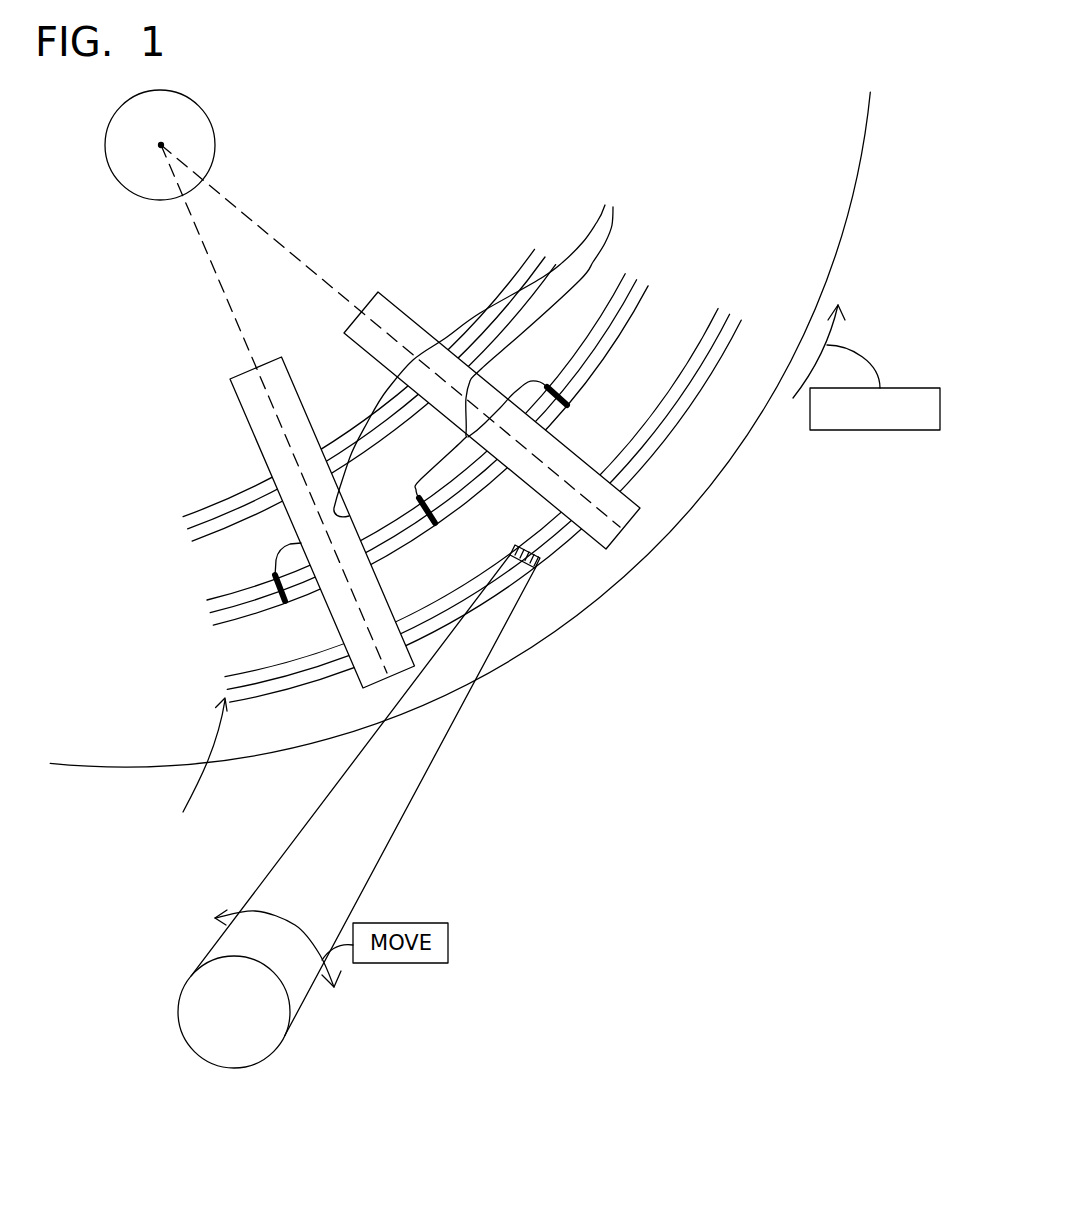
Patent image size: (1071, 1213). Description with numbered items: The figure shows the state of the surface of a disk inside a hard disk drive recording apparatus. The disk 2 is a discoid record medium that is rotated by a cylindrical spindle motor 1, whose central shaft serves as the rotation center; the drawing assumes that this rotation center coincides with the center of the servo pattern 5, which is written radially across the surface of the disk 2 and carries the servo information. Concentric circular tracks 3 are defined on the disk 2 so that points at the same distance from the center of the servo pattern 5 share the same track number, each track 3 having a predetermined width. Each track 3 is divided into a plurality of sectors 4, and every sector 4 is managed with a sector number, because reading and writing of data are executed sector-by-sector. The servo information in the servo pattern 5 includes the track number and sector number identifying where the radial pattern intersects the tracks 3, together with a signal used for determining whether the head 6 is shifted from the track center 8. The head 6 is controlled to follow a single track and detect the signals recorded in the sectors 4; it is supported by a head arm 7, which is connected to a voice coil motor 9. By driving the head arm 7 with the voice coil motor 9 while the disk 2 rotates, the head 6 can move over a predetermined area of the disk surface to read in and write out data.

The spindle motor 1 is at (200, 142).
The disk 2 is at (820, 207).
The tracks 3 is at (564, 266).
The sectors 4 is at (474, 348).
The servo pattern 5 is at (340, 610).
The head 6 is at (535, 563).
The head arm 7 is at (440, 710).
The track center 8 is at (196, 765).
The voice coil motor 9 is at (248, 1033).